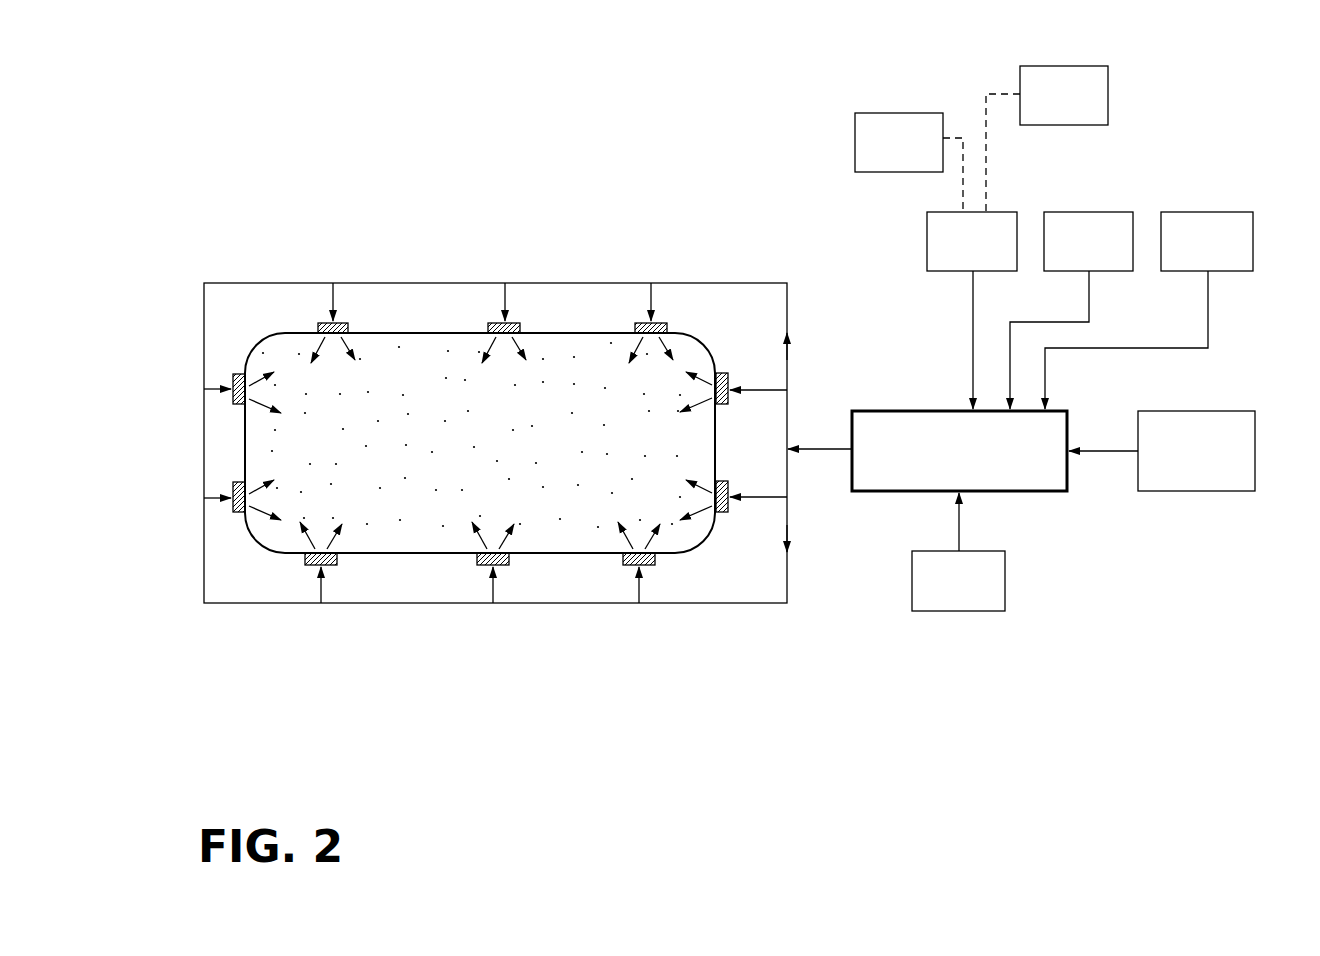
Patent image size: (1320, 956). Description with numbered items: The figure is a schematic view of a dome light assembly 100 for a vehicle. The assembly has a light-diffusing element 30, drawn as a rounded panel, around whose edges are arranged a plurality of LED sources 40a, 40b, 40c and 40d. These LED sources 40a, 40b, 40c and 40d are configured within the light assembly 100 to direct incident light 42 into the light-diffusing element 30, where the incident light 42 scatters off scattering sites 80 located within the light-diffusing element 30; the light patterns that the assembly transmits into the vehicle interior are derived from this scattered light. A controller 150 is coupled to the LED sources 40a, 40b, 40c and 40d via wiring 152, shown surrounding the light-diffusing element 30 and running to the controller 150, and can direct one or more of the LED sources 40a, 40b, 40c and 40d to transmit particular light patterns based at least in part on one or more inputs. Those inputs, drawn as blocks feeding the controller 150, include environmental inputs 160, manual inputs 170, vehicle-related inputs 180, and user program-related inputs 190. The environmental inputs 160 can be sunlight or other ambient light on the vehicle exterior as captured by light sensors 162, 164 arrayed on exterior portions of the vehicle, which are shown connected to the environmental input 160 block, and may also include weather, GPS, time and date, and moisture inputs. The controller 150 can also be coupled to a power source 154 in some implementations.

The dome light assembly 100 is at (848, 60).
The light-diffusing element 30 is at (700, 345).
The scattering sites 80 is at (303, 420).
The LED source 40a is at (728, 373).
The LED source 40b is at (478, 566).
The LED source 40c is at (235, 406).
The LED source 40d is at (492, 322).
The incident light 42 is at (520, 355).
The controller 150 is at (964, 458).
The wiring 152 is at (788, 410).
The power source 154 is at (967, 593).
The environmental inputs 160 is at (973, 182).
The light sensor 162 is at (907, 155).
The light sensor 164 is at (1072, 108).
The manual inputs 170 is at (1096, 254).
The vehicle-related inputs 180 is at (1214, 254).
The user program-related inputs 190 is at (1206, 463).